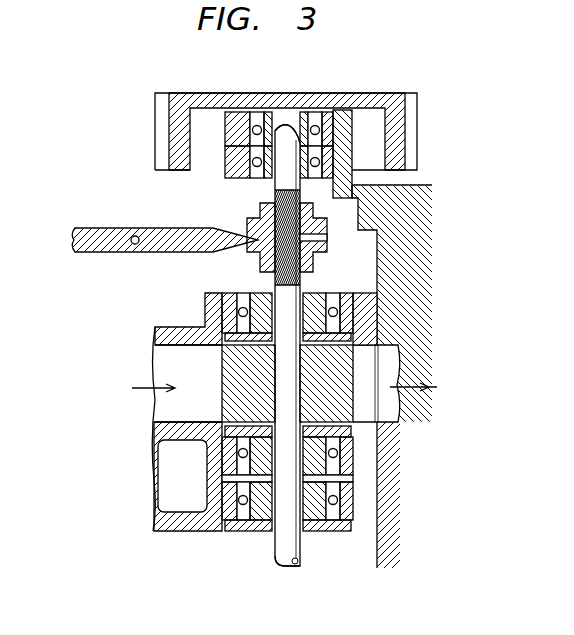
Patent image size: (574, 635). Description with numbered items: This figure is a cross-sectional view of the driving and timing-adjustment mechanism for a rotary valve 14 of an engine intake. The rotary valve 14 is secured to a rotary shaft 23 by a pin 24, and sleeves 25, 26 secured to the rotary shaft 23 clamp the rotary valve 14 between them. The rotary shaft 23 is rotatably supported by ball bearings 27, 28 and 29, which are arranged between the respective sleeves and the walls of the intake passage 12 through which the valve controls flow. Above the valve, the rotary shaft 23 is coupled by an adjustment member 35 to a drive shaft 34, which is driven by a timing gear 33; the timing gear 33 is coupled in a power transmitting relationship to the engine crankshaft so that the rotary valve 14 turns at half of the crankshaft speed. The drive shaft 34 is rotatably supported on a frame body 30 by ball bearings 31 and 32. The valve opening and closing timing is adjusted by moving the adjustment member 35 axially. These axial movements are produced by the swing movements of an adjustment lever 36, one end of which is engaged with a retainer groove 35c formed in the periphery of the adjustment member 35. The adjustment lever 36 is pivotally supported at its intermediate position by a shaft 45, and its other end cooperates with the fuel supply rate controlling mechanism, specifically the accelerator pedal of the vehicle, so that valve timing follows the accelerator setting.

The intake passage 12 is at (157, 433).
The rotary valve 14 is at (232, 380).
The rotary shaft 23 is at (273, 553).
The pin 24 is at (287, 380).
The sleeve 25 is at (355, 337).
The sleeve 26 is at (360, 430).
The ball bearing 27 is at (357, 302).
The ball bearing 28 is at (345, 460).
The ball bearing 29 is at (345, 497).
The frame body 30 is at (368, 214).
The ball bearing 31 is at (250, 112).
The ball bearing 32 is at (250, 148).
The timing gear 33 is at (348, 94).
The drive shaft 34 is at (282, 180).
The adjustment member 35 is at (318, 257).
The retainer groove 35c is at (317, 238).
The adjustment lever 36 is at (114, 229).
The shaft 45 is at (137, 246).